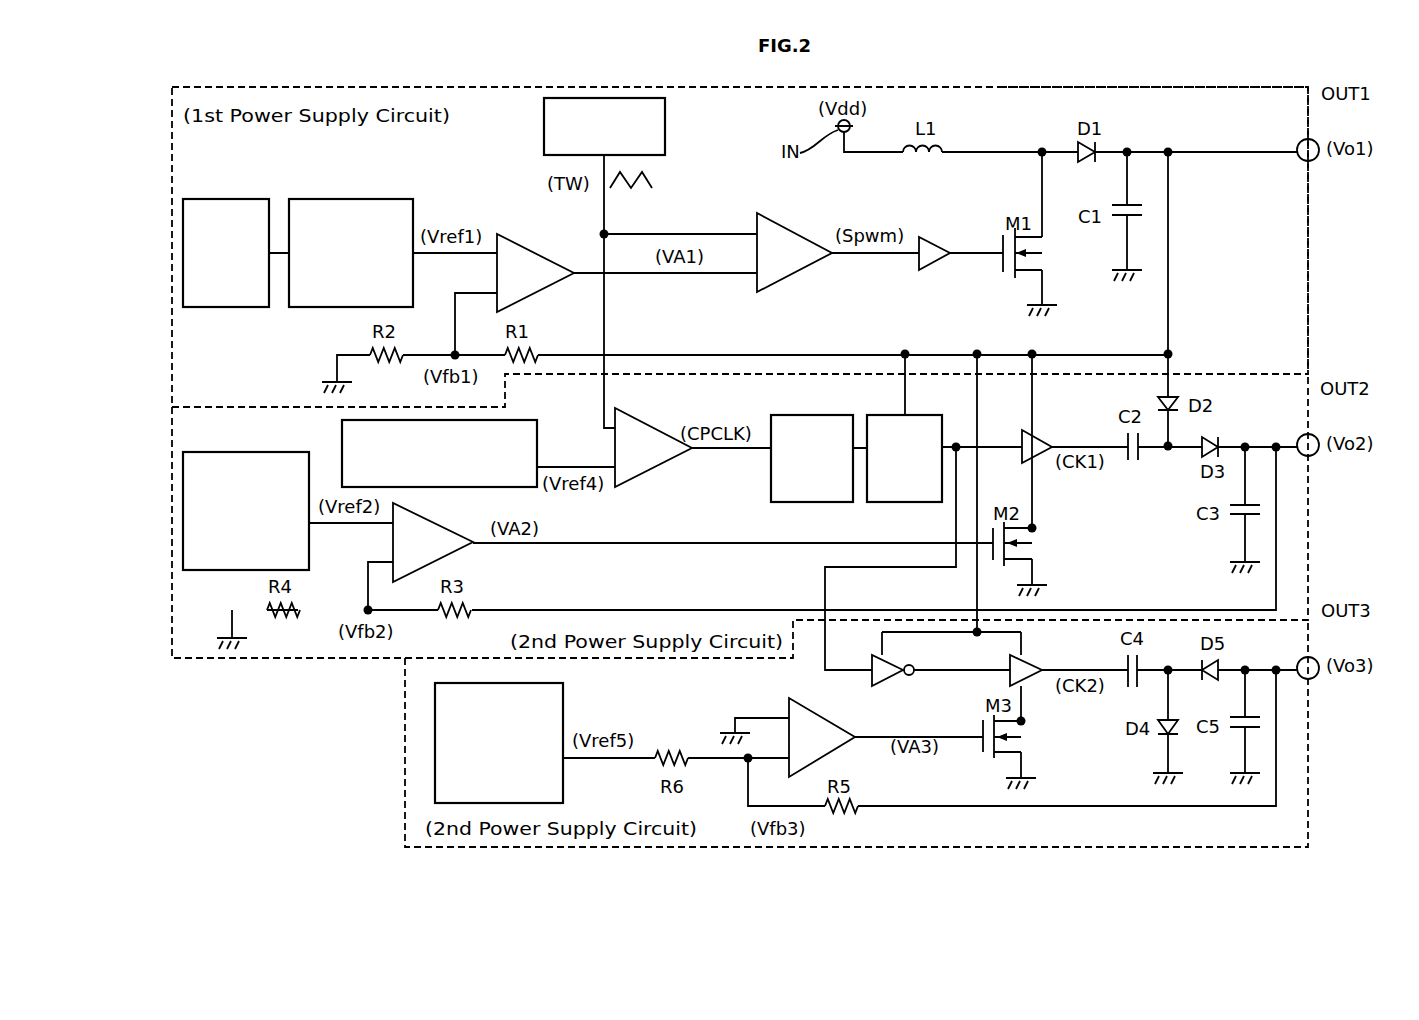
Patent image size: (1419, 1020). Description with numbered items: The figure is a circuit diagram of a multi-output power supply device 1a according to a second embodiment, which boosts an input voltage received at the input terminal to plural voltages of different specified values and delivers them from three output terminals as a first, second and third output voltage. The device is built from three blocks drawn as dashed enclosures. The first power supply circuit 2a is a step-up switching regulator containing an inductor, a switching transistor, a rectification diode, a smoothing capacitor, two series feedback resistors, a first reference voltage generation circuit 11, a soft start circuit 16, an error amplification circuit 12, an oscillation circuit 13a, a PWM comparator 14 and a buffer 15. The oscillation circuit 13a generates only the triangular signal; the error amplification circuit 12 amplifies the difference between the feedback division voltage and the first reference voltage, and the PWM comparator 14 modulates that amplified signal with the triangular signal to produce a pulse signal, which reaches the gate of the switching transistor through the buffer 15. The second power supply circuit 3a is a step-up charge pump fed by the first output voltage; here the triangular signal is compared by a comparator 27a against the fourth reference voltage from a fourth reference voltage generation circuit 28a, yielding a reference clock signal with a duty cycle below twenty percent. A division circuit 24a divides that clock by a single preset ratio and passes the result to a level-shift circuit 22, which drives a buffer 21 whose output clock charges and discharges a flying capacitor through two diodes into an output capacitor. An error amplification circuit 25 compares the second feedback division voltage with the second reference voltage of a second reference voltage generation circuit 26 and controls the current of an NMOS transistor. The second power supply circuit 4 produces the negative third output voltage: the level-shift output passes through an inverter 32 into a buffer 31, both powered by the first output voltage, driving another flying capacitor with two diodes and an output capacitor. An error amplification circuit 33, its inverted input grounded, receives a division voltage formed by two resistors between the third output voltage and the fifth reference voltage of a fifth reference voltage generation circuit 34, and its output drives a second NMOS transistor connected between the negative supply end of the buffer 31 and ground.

The multi-output power supply device 1a is at (1018, 78).
The first power supply circuit 2a is at (1248, 90).
The second power supply circuit 3a is at (282, 660).
The second power supply circuit 4 is at (417, 710).
The first reference voltage generation circuit 11 is at (350, 199).
The error amplification circuit 12 is at (540, 293).
The oscillation circuit 13a is at (544, 110).
The PWM comparator 14 is at (800, 275).
The buffer 15 is at (937, 237).
The soft start circuit 16 is at (228, 199).
The buffer 21 is at (1038, 430).
The level-shift circuit 22 is at (915, 415).
The division circuit 24a is at (815, 415).
The error amplification circuit 25 is at (445, 556).
The second reference voltage generation circuit 26 is at (250, 452).
The comparator 27a is at (650, 425).
The fourth reference voltage generation circuit 28a is at (537, 443).
The buffer 31 is at (1035, 658).
The inverter 32 is at (912, 665).
The error amplification circuit 33 is at (850, 716).
The fifth reference voltage generation circuit 34 is at (563, 717).